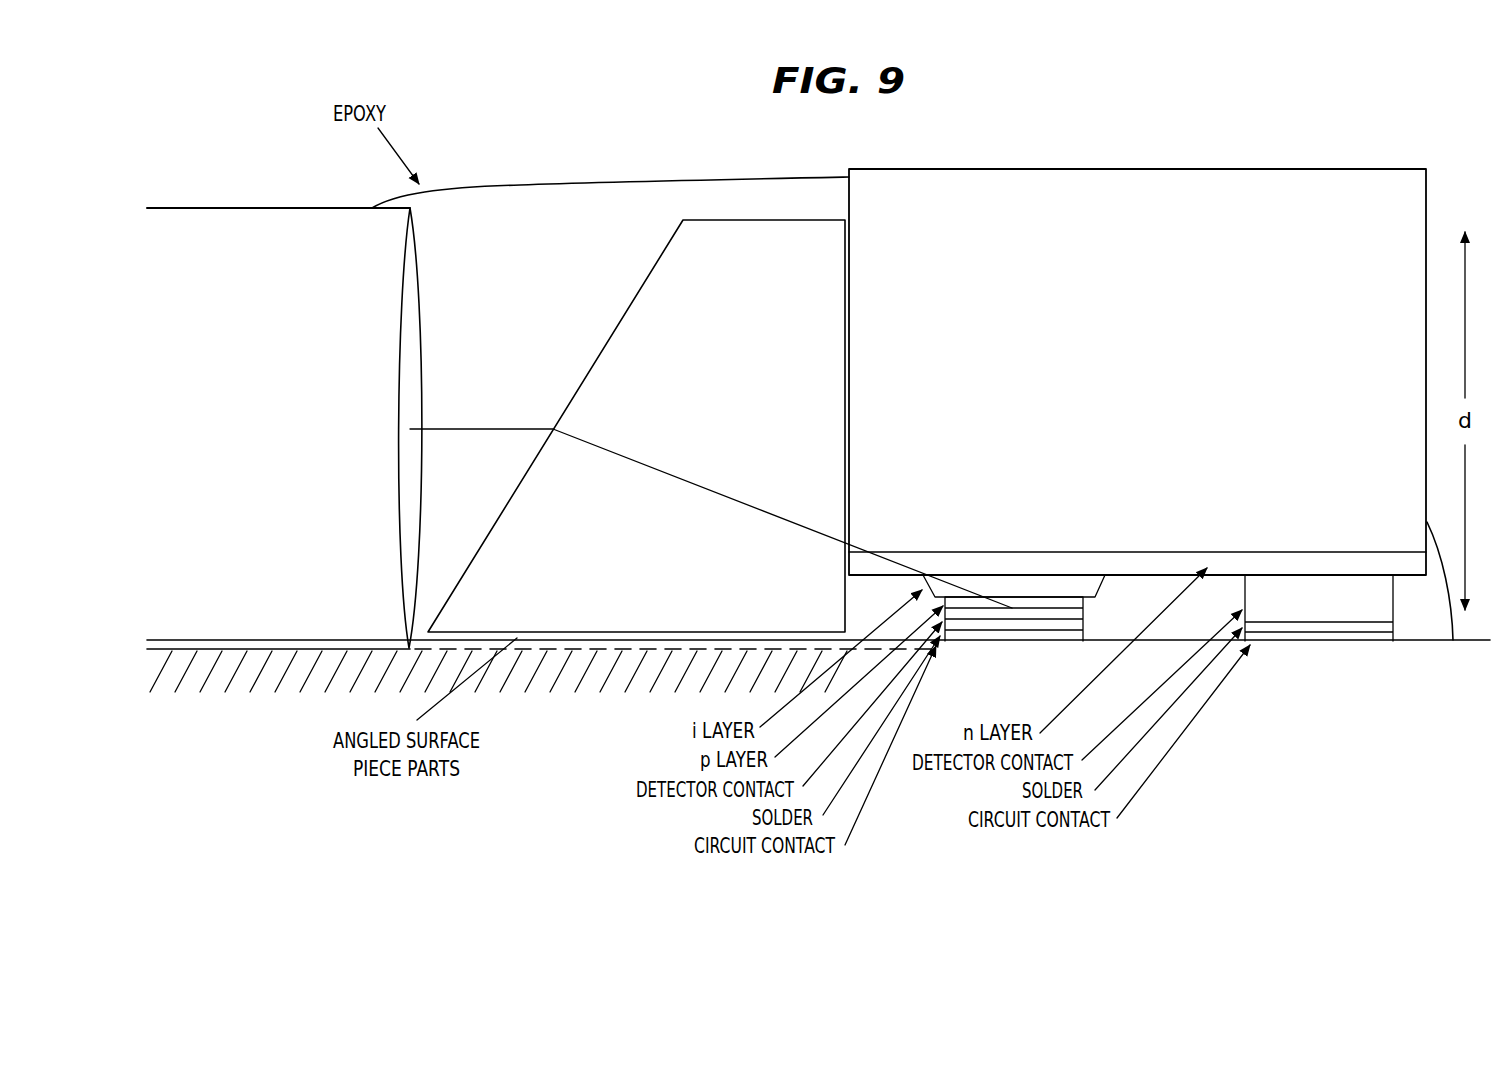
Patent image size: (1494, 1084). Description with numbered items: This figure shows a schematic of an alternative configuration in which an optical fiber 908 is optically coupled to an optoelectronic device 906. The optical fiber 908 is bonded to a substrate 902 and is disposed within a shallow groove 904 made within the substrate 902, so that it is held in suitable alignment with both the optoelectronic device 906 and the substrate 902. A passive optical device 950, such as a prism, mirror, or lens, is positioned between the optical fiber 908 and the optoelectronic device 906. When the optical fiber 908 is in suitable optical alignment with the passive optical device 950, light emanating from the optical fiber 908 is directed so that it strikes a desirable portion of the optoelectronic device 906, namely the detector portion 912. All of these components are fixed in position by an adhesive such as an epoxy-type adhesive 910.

The substrate 902 is at (250, 683).
The shallow groove 904 is at (645, 650).
The optoelectronic device 906 is at (1297, 170).
The optical fiber 908 is at (218, 212).
The epoxy-type adhesive 910 is at (628, 187).
The detector portion 912 is at (989, 600).
The passive optical device 950 is at (615, 318).